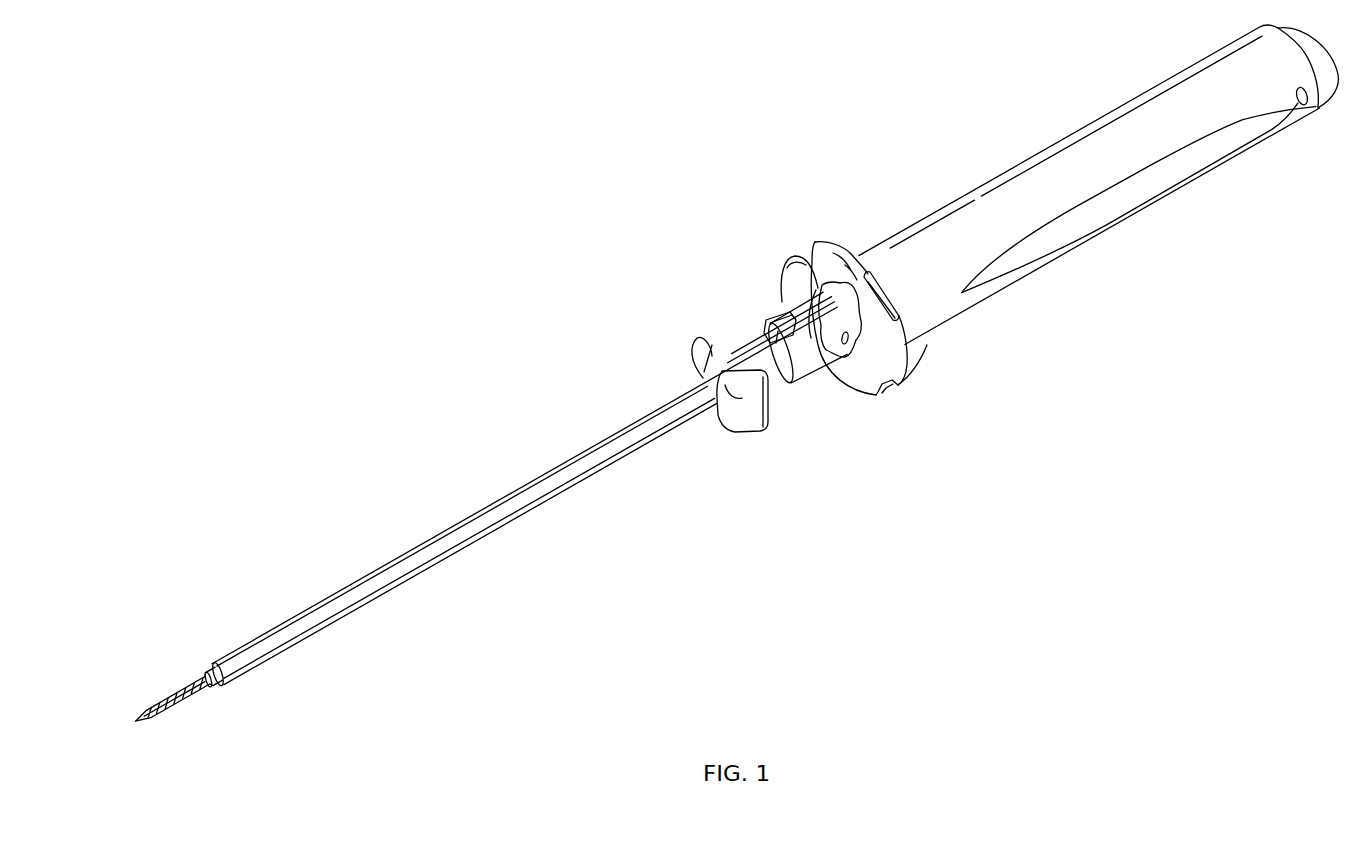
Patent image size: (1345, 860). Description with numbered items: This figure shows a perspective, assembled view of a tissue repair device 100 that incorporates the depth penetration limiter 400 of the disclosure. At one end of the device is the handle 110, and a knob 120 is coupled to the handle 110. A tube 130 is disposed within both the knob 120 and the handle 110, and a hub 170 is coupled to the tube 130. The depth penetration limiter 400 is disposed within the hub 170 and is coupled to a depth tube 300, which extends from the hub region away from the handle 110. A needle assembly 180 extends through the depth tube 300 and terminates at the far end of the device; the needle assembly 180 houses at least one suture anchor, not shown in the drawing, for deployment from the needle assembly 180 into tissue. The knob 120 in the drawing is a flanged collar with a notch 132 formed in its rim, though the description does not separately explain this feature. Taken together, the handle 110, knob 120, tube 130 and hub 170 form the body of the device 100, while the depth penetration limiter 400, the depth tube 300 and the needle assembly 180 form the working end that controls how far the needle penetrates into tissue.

The tissue repair device 100 is at (641, 320).
The handle 110 is at (1117, 126).
The knob 120 is at (885, 268).
The tube 130 is at (837, 322).
The notch 132 is at (872, 400).
The hub 170 is at (770, 418).
The needle assembly 180 is at (198, 690).
The depth tube 300 is at (445, 548).
The depth penetration limiter 400 is at (765, 322).